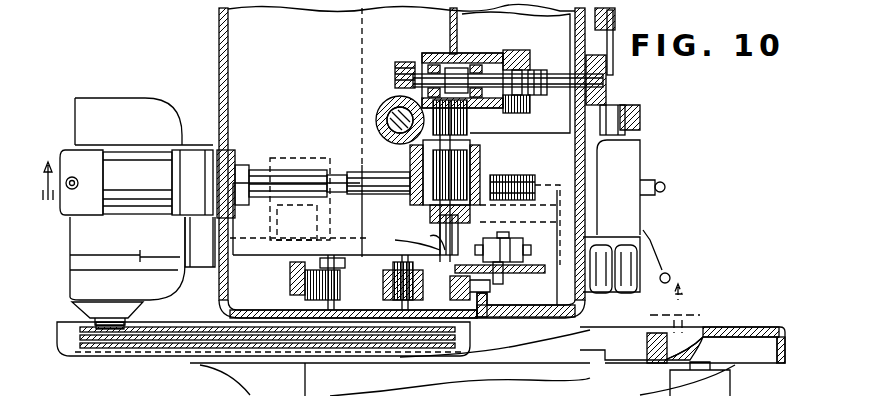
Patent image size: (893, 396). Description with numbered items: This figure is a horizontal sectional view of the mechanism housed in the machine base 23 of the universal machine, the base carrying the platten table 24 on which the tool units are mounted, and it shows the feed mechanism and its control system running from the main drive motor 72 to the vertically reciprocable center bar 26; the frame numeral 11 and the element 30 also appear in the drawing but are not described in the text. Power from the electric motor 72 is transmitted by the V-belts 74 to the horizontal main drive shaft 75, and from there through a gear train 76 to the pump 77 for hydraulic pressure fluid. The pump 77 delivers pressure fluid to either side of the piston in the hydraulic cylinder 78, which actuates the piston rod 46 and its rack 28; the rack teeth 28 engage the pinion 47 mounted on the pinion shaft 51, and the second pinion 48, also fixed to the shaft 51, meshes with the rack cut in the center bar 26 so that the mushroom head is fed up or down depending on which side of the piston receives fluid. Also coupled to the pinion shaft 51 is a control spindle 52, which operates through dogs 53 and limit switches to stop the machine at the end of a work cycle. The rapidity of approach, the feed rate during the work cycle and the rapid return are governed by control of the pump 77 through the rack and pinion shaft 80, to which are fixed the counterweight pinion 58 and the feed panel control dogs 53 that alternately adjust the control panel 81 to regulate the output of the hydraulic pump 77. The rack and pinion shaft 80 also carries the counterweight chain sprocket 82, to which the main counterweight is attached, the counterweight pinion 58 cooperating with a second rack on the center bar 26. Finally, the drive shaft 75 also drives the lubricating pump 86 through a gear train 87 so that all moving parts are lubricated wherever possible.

The frame 11 is at (370, 228).
The machine base 23 is at (220, 78).
The platten table 24 is at (780, 328).
The center bar 26 is at (374, 106).
The rack teeth 28 is at (536, 186).
The bearing housing 30 is at (438, 129).
The piston 46 is at (525, 175).
The pinion 47 is at (520, 209).
The second pinion 48 is at (475, 125).
The pinion shaft 51 is at (458, 240).
The control spindle 52 is at (430, 246).
The dogs 53 is at (618, 28).
The counterweight pinion 58 is at (404, 62).
The motor 72 is at (133, 100).
The V-belts 74 is at (165, 343).
The main drive shaft 75 is at (352, 238).
The gear train 76 is at (358, 292).
The pump 77 is at (303, 158).
The hydraulic cylinder 78 is at (140, 170).
The rack and pinion shaft 80 is at (541, 74).
The control panel 81 is at (640, 160).
The counterweight chain sprocket 82 is at (512, 52).
The lubricating pump 86 is at (508, 237).
The gear train 87 is at (480, 288).